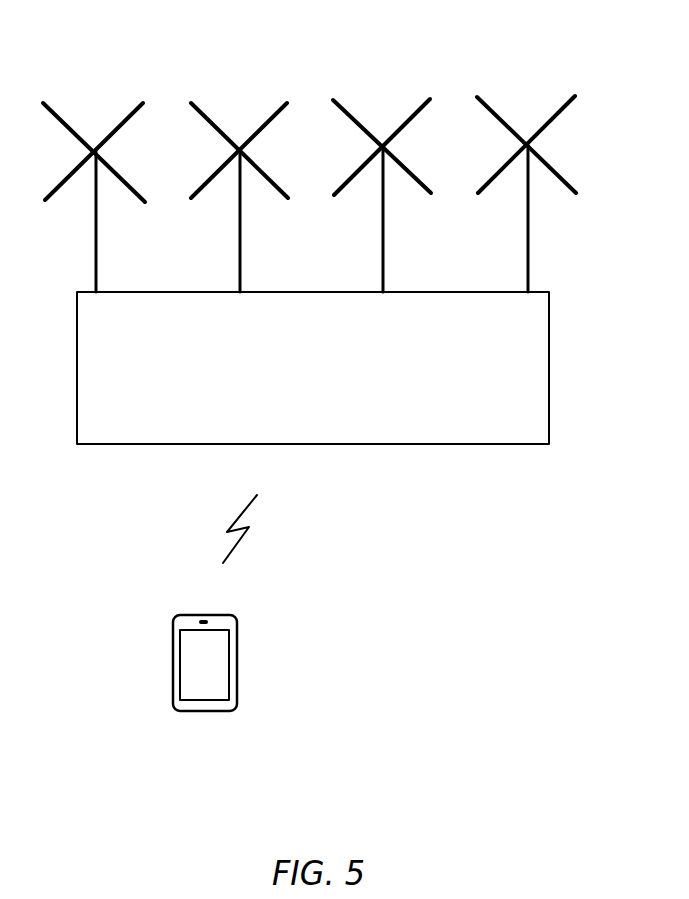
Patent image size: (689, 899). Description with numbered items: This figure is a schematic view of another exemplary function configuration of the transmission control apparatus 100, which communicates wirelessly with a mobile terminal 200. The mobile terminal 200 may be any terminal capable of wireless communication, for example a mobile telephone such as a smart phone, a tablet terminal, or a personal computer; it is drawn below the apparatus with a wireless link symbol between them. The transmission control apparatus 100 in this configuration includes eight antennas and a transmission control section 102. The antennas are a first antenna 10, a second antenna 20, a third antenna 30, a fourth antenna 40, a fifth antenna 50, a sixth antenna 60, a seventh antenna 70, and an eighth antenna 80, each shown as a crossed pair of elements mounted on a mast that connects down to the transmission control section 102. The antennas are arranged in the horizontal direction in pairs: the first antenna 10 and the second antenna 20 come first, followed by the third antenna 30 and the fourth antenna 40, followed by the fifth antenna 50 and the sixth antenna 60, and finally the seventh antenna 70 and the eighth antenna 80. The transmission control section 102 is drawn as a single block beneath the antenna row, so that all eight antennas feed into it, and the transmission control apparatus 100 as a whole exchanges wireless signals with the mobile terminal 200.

The transmission control apparatus 100 is at (60, 36).
The first antenna 10 is at (47, 104).
The second antenna 20 is at (140, 104).
The third antenna 30 is at (193, 104).
The fourth antenna 40 is at (284, 104).
The fifth antenna 50 is at (336, 101).
The sixth antenna 60 is at (426, 101).
The seventh antenna 70 is at (480, 99).
The eighth antenna 80 is at (571, 99).
The transmission control section 102 is at (549, 359).
The mobile terminal 200 is at (238, 665).